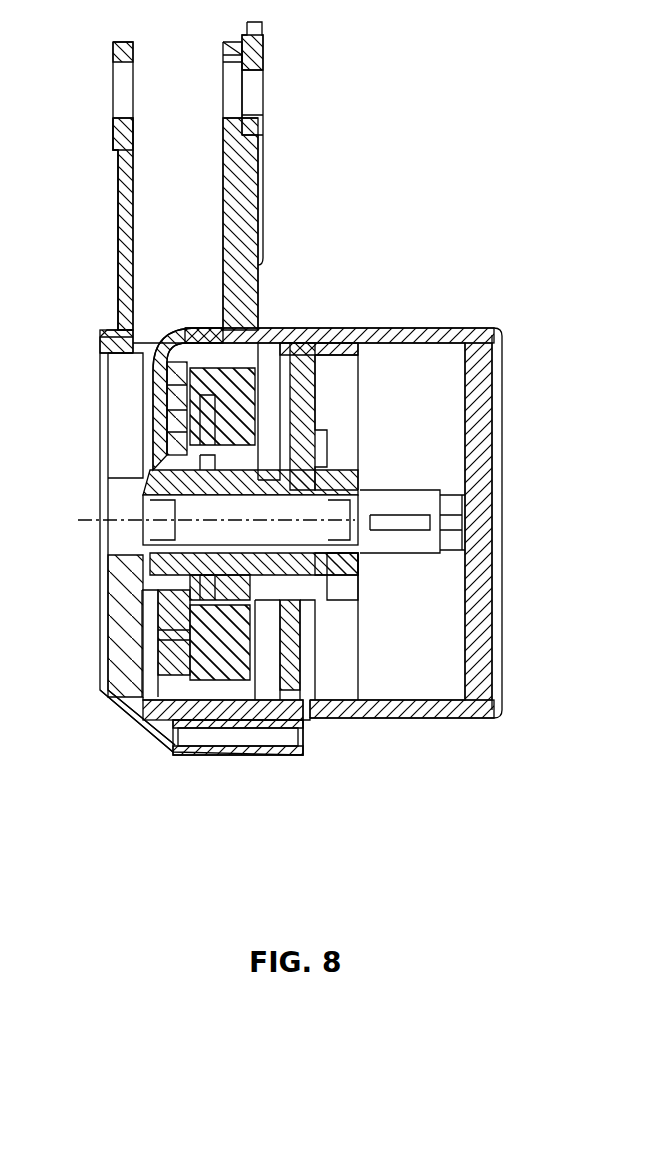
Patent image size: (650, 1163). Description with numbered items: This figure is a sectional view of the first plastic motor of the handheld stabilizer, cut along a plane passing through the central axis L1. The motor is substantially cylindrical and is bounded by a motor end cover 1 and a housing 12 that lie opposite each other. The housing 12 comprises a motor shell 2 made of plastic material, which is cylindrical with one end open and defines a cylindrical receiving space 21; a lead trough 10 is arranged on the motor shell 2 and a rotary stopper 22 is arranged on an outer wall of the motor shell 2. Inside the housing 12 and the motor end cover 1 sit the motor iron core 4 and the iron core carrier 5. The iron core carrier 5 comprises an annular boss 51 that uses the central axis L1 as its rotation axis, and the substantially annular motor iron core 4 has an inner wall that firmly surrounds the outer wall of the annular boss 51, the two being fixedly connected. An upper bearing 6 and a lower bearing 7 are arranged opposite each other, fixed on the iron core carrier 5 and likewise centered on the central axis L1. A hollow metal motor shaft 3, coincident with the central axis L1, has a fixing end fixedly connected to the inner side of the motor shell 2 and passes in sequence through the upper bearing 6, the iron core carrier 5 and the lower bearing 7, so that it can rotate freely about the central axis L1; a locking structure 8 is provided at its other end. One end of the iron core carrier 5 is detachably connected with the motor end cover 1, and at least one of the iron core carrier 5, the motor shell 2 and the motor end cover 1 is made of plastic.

The motor end cover 1 is at (497, 368).
The lead trough 10 is at (130, 410).
The hollow metal motor shaft 3 is at (200, 540).
The central axis L1 is at (195, 522).
The receiving space 21 is at (268, 395).
The locking structure 8 is at (340, 490).
The upper bearing 6 is at (197, 573).
The annular boss 51 is at (187, 607).
The lower bearing 7 is at (330, 570).
The housing 12 is at (100, 668).
The motor shell 2 is at (127, 707).
The motor iron core 4 is at (222, 640).
The iron core carrier 5 is at (300, 660).
The rotary stopper 22 is at (245, 748).